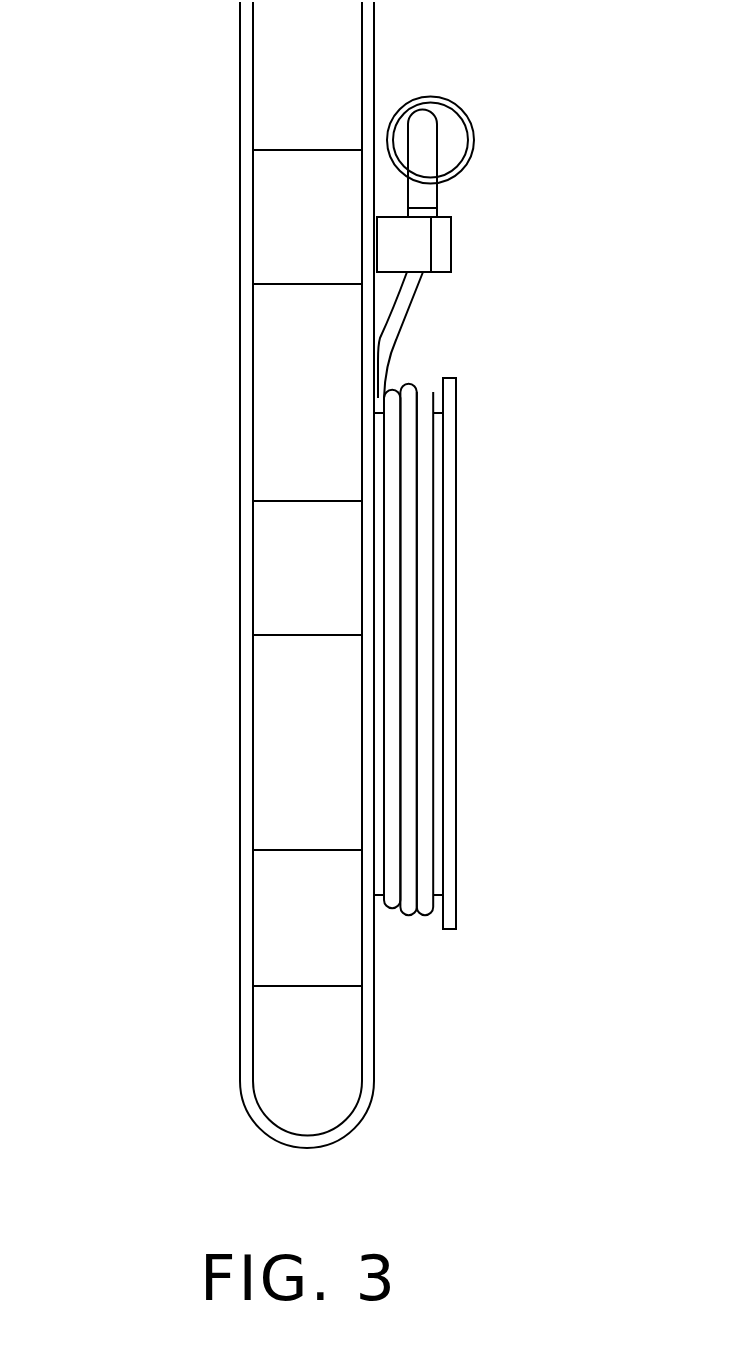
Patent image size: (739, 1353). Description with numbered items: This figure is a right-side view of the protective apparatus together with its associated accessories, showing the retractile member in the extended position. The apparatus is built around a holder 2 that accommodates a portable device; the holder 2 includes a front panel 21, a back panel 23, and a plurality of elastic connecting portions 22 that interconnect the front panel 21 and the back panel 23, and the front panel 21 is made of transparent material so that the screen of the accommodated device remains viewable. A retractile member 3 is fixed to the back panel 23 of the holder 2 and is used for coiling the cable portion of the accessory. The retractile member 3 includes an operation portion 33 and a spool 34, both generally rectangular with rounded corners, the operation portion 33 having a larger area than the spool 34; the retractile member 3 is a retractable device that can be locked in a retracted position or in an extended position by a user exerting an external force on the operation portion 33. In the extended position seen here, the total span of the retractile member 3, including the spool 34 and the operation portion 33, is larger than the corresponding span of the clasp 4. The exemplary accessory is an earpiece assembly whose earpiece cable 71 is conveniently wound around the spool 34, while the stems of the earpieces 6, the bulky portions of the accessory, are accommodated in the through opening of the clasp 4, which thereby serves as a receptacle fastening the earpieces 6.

The holder 2 is at (105, 213).
The front panel 21 is at (240, 252).
The elastic connecting portions 22 is at (287, 562).
The back panel 23 is at (367, 368).
The retractile member 3 is at (583, 688).
The operation portion 33 is at (447, 713).
The spool 34 is at (437, 788).
The clasp 4 is at (435, 237).
The earpieces 6 is at (447, 115).
The earpiece cable 71 is at (402, 310).